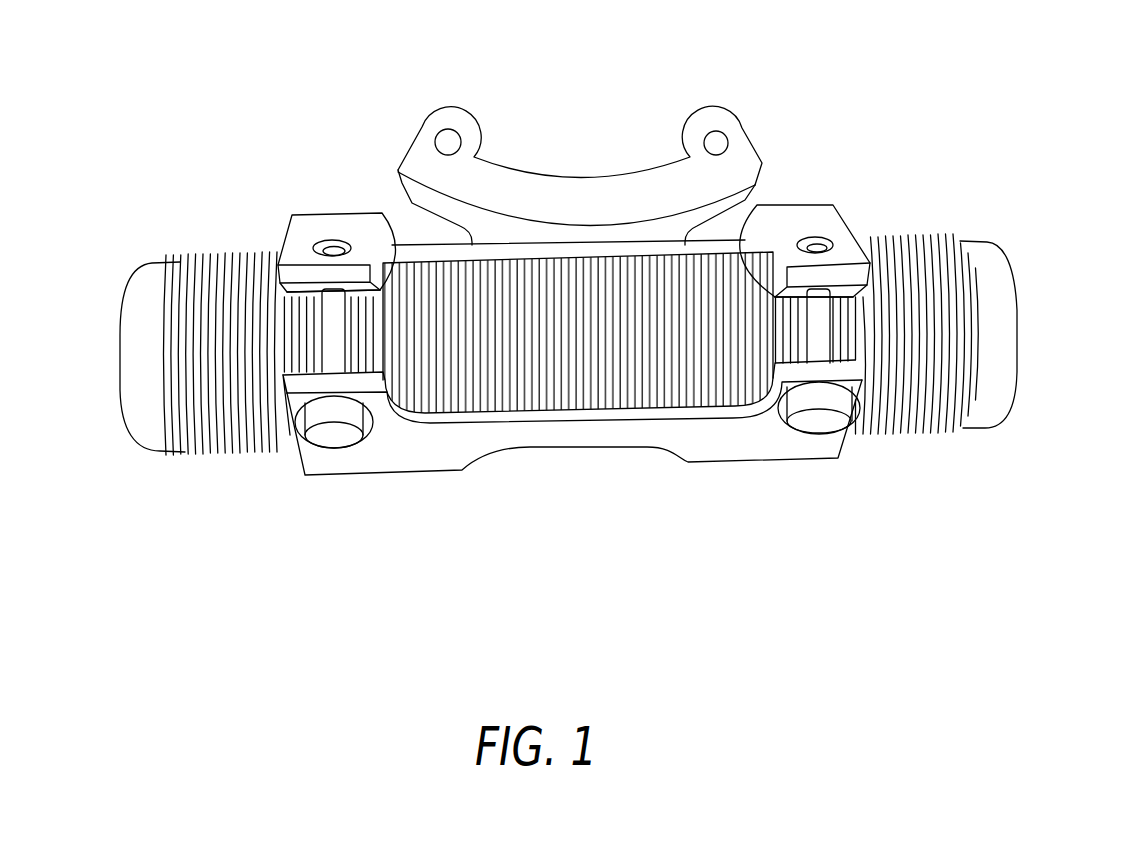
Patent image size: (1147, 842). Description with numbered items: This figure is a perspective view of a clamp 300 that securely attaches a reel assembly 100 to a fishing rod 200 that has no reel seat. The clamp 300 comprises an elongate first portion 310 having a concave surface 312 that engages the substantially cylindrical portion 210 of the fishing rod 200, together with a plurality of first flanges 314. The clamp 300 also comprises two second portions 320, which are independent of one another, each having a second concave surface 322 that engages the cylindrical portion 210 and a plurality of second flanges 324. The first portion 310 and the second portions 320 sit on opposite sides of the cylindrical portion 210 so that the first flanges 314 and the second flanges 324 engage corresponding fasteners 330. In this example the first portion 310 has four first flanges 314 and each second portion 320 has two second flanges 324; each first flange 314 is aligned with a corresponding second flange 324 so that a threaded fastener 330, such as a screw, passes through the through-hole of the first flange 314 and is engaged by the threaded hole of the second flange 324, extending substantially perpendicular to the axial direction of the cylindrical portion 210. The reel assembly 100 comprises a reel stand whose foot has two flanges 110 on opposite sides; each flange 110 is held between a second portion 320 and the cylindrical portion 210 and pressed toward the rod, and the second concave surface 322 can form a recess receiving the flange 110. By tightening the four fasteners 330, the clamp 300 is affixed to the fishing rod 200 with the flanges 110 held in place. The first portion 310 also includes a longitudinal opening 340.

The reel assembly 100 is at (582, 131).
The flange 110 is at (417, 248).
The fishing rod 200 is at (540, 376).
The substantially cylindrical portion 210 is at (208, 438).
The clamp 300 is at (902, 148).
The first portion 310 is at (641, 474).
The concave surface 312 is at (568, 390).
The first flange 314 is at (387, 412).
The second portion 320 is at (337, 227).
The second concave surface 322 is at (399, 284).
The second flange 324 is at (297, 260).
The fastener 330 is at (335, 440).
The longitudinal opening 340 is at (518, 489).